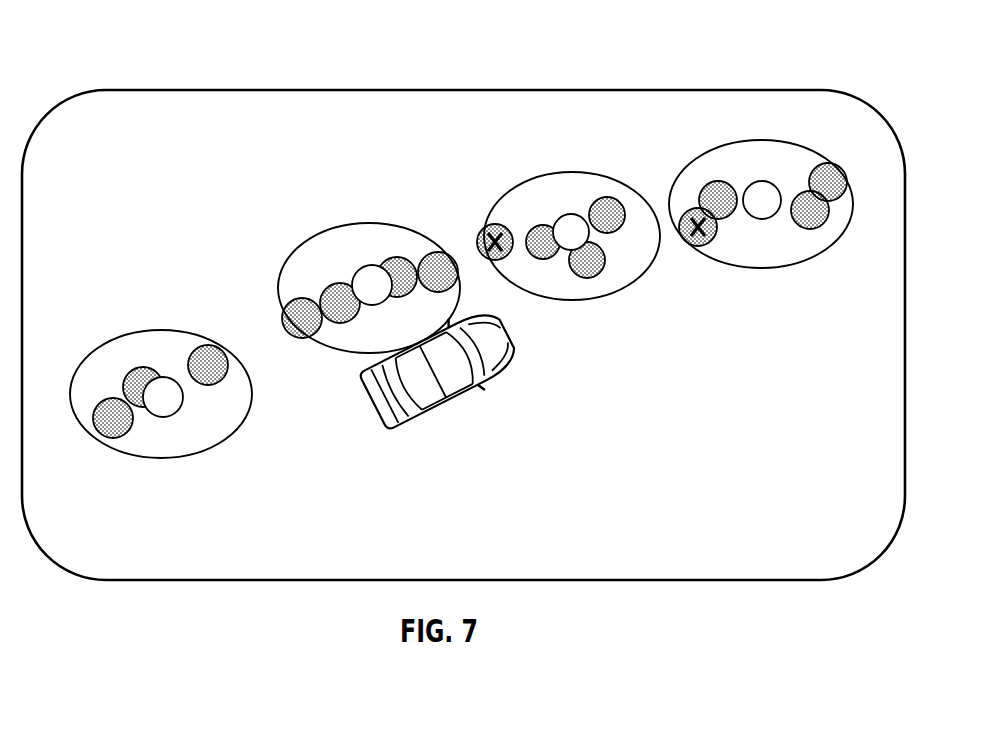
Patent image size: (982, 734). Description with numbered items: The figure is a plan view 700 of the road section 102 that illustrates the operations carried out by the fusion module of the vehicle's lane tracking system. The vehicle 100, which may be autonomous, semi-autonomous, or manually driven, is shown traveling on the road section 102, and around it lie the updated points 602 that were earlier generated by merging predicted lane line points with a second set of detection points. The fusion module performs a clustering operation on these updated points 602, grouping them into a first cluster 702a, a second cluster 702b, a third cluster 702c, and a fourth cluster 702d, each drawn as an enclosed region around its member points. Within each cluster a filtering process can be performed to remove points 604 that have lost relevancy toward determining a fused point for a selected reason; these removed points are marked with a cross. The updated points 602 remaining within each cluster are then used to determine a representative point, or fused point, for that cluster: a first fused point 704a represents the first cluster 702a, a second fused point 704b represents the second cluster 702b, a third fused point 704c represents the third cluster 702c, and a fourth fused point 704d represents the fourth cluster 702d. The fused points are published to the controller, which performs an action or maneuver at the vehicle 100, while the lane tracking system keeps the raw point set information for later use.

The vehicle 100 is at (437, 372).
The road section 102 is at (643, 371).
The updated points 602 is at (115, 438).
The points that have lost relevancy 604 is at (489, 224).
The plan view 700 is at (463, 302).
The first cluster 702a is at (185, 330).
The second cluster 702b is at (297, 248).
The third cluster 702c is at (583, 170).
The fourth cluster 702d is at (775, 140).
The first fused point 704a is at (163, 376).
The second fused point 704b is at (371, 264).
The third fused point 704c is at (571, 213).
The fourth fused point 704d is at (764, 180).